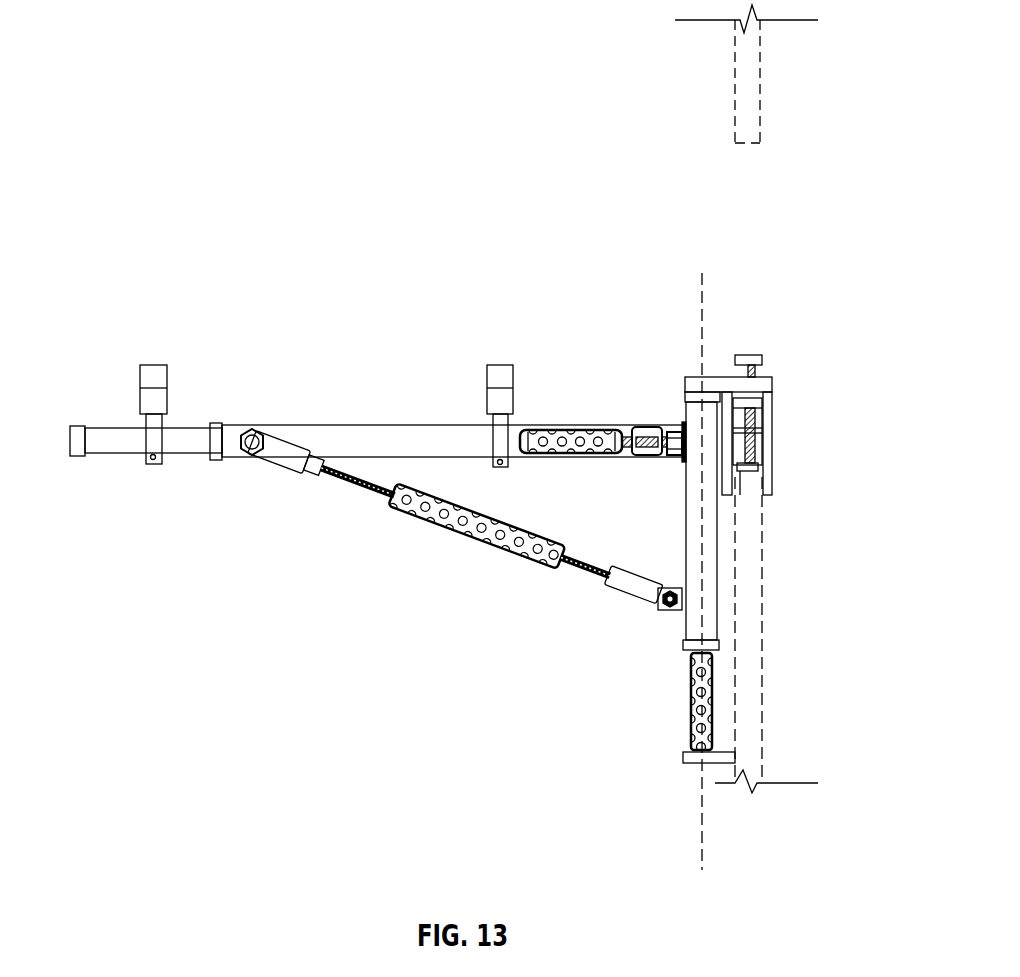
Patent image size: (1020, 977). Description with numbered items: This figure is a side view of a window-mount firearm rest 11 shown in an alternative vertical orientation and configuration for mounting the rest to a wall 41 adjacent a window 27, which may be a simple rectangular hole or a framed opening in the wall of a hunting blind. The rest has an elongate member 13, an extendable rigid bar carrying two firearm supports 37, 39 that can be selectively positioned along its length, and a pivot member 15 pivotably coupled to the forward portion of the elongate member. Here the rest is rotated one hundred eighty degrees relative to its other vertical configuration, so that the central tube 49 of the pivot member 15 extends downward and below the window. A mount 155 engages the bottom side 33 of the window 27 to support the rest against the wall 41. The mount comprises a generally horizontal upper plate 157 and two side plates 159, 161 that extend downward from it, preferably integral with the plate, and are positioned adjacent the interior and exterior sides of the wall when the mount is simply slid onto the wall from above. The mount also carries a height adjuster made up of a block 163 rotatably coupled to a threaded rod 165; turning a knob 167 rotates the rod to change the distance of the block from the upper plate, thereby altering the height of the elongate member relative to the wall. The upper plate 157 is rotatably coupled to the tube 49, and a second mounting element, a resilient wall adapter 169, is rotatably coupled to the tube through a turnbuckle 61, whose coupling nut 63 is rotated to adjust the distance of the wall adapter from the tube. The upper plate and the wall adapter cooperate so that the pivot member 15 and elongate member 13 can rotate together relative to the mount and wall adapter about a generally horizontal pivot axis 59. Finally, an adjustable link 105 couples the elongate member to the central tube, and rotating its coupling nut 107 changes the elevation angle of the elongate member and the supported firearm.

The window-mount firearm rest 11 is at (240, 267).
The elongate member 13 is at (367, 423).
The pivot member 15 is at (729, 536).
The window 27 is at (743, 148).
The bottom side of window 33 is at (740, 480).
The firearm support 37 is at (498, 363).
The firearm support 39 is at (152, 363).
The wall 41 is at (752, 698).
The central tube 49 is at (698, 520).
The pivot axis 59 is at (700, 298).
The turnbuckle 61 is at (668, 696).
The coupling nut 63 is at (698, 727).
The adjustable link 105 is at (370, 492).
The coupling nut 107 is at (510, 548).
The mount 155 is at (773, 393).
The upper plate 157 is at (690, 383).
The side plate 159 is at (770, 455).
The side plate 161 is at (720, 455).
The block 163 is at (756, 470).
The threaded rod 165 is at (752, 413).
The knob 167 is at (752, 356).
The wall adapter 169 is at (683, 758).